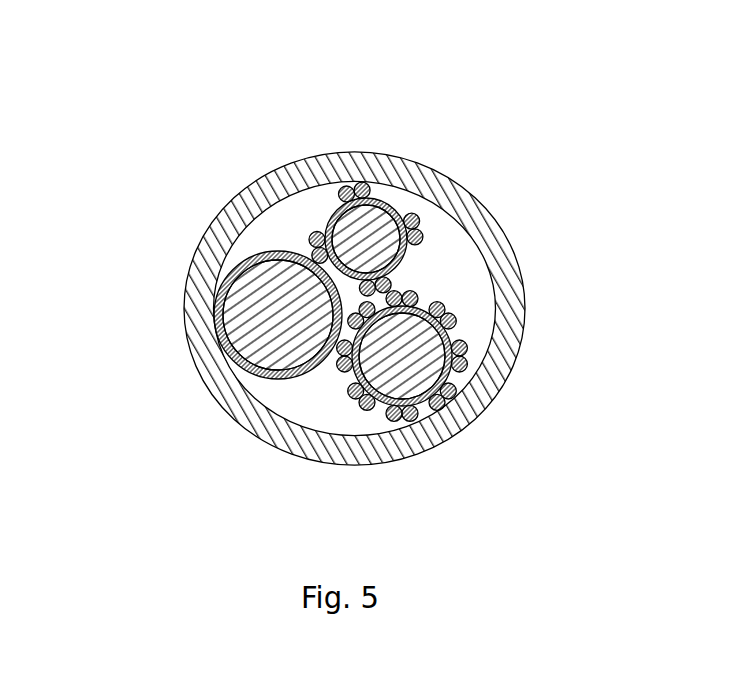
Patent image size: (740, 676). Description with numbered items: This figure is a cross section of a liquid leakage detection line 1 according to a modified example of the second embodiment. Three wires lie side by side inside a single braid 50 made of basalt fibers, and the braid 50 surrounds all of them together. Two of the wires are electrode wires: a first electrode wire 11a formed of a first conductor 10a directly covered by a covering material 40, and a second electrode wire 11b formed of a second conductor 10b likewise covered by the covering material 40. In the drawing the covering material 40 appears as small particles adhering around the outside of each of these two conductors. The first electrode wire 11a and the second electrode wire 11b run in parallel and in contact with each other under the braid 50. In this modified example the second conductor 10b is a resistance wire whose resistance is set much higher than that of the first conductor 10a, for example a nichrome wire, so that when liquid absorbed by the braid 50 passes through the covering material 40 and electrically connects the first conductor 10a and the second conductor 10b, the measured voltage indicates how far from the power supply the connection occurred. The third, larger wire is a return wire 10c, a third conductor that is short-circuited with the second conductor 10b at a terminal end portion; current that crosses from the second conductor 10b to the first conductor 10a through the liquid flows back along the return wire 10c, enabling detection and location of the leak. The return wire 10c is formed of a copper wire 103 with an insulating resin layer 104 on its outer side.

The liquid leakage detection line 1 is at (311, 128).
The braid 50 is at (347, 445).
The return wire (third conductor) 10c is at (113, 297).
The copper wire 103 is at (285, 309).
The insulating resin layer 104 is at (228, 372).
The second electrode wire 11b is at (463, 113).
The second conductor (resistance wire) 10b is at (382, 205).
The first electrode wire 11a is at (575, 295).
The first conductor 10a is at (454, 330).
The covering material 40 is at (413, 214).